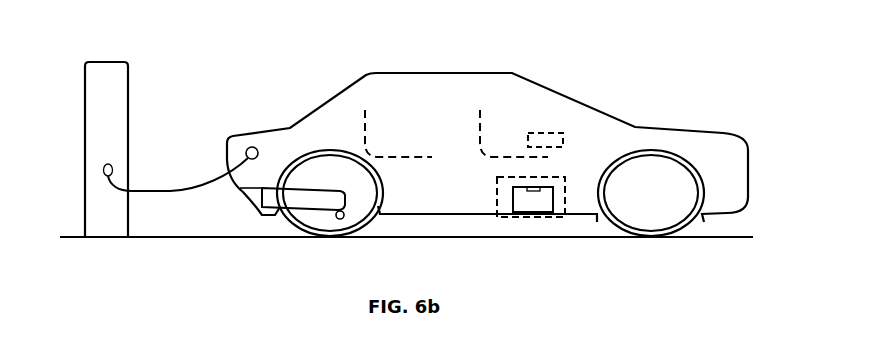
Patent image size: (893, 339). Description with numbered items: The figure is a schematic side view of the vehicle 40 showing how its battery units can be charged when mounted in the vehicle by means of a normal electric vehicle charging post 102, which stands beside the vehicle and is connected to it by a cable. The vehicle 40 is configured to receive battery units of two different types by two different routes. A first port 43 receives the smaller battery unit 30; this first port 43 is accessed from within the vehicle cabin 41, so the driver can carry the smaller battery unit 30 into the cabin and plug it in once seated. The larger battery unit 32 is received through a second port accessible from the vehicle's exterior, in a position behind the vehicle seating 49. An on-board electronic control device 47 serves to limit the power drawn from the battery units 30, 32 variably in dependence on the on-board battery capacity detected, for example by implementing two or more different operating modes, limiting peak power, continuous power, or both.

The electric vehicle charging post 102 is at (128, 75).
The vehicle 40 is at (618, 103).
The larger battery unit 32 is at (252, 200).
The vehicle seating 49 is at (375, 147).
The vehicle cabin 41 is at (490, 145).
The on-board electronic control device 47 is at (547, 133).
The first port 43 is at (565, 203).
The smaller battery unit 30 is at (513, 197).